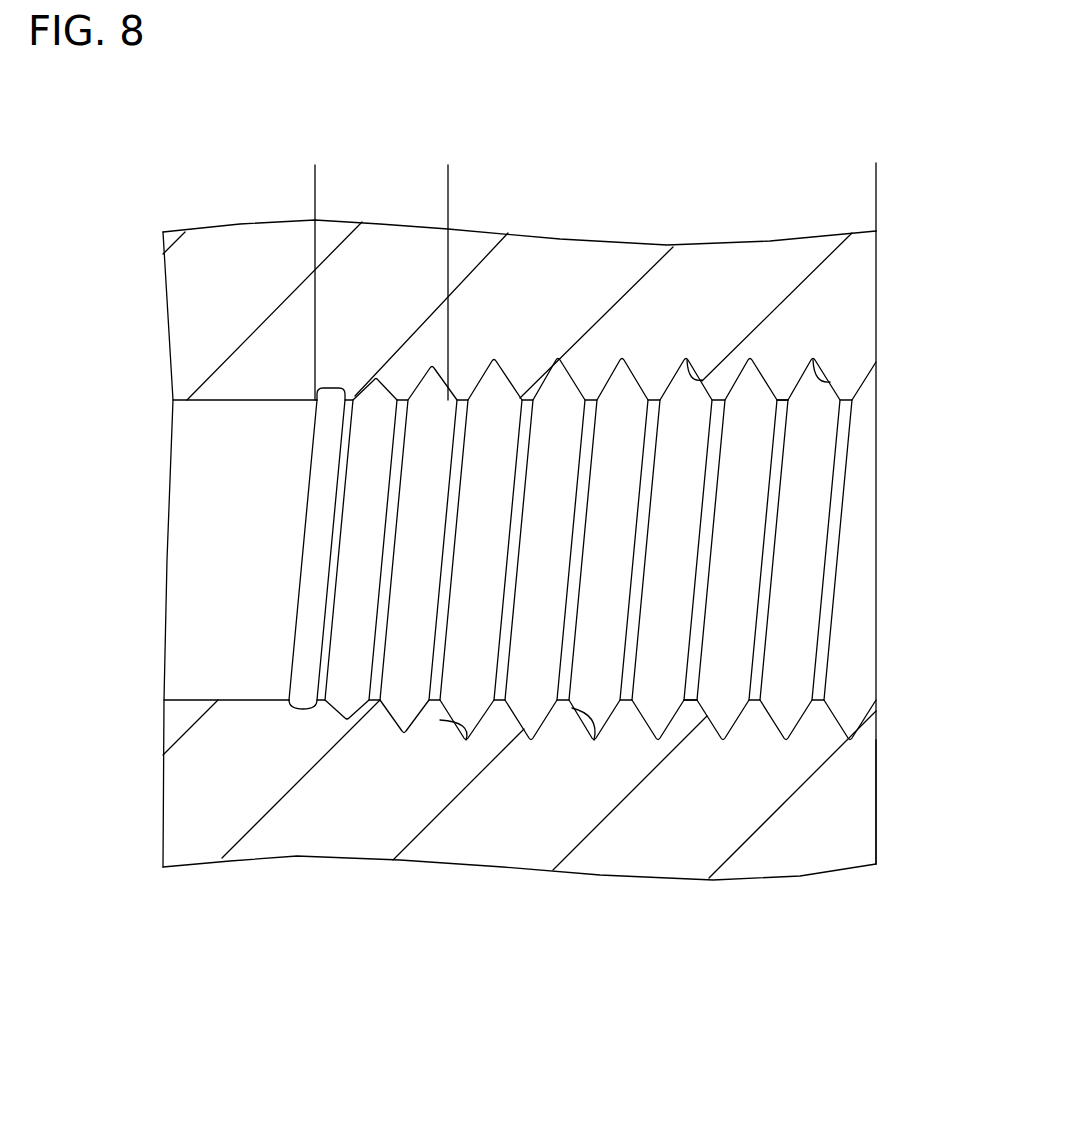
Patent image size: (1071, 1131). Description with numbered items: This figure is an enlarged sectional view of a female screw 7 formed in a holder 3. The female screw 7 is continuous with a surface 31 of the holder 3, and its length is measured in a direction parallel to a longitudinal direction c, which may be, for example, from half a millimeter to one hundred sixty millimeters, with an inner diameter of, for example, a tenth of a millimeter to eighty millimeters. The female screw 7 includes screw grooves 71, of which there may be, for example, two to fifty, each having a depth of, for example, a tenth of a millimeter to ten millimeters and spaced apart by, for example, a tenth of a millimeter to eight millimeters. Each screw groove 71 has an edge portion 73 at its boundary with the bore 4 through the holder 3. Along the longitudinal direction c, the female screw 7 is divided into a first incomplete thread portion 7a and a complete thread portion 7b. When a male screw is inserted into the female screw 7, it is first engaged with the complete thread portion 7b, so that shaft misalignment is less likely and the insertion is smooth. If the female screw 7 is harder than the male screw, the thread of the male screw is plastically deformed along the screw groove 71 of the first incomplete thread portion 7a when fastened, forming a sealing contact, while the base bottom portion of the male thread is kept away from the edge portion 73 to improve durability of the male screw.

The holder 3 is at (808, 825).
The surface of the holder 31 is at (877, 792).
The through hole 4 is at (217, 596).
The female screw 7 is at (863, 125).
The first incomplete thread portion 7a is at (448, 186).
The complete thread portion 7b is at (876, 201).
The screw groove 71 is at (702, 380).
The edge portion 73 is at (783, 400).
The longitudinal direction c is at (615, 915).